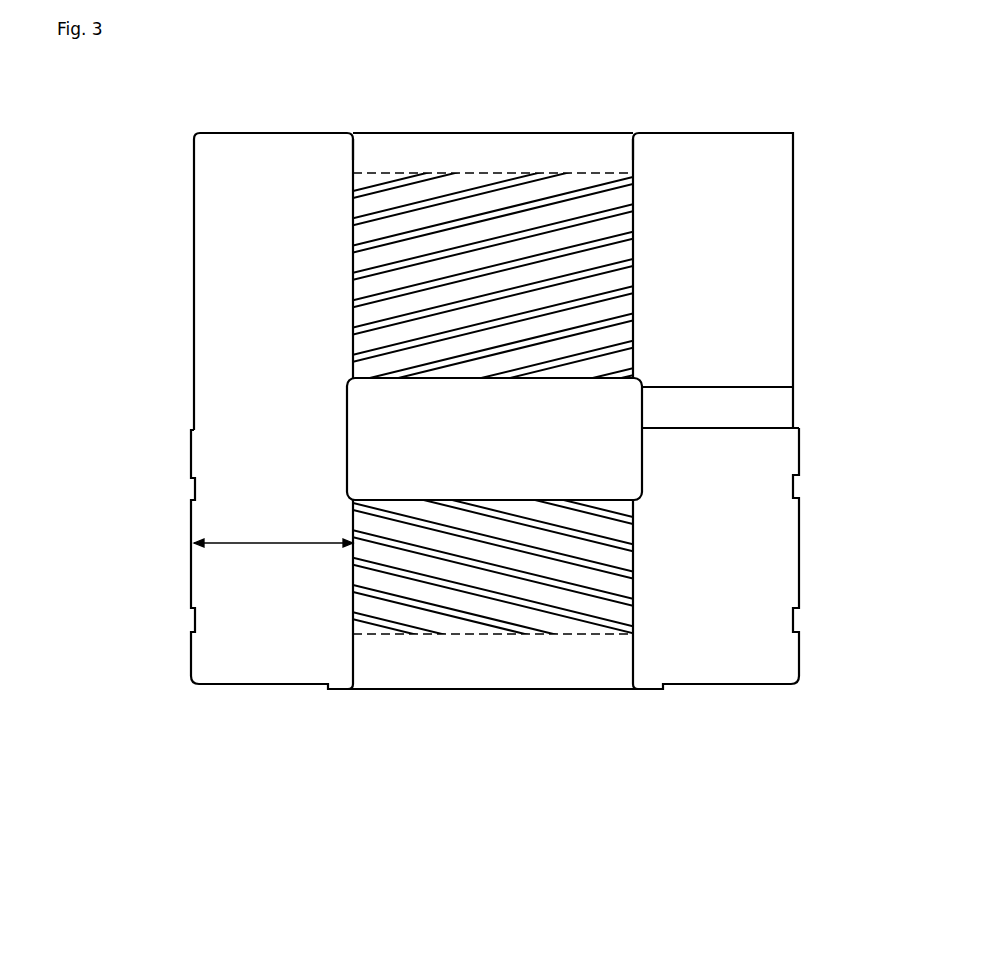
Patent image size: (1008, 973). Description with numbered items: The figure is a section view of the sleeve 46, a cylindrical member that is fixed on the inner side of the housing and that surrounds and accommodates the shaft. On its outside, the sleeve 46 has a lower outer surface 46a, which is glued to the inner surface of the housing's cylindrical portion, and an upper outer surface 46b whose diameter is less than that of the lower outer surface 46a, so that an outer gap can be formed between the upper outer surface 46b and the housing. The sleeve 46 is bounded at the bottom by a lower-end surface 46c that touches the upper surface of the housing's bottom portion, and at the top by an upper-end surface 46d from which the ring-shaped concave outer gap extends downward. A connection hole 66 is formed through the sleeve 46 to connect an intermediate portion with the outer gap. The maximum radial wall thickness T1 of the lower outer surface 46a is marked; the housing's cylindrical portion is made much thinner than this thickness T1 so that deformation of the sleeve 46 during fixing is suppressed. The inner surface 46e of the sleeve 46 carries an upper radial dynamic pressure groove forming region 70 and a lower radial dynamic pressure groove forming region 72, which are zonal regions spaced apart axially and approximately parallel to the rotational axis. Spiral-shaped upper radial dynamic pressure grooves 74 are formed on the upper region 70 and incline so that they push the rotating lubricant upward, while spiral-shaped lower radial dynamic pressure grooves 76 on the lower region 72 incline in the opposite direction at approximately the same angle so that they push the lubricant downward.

The sleeve 46 is at (494, 448).
The lower outer surface 46a is at (192, 568).
The upper outer surface 46b is at (194, 288).
The lower-end surface 46c is at (250, 689).
The upper-end surface 46d is at (215, 132).
The inner surface 46e is at (580, 153).
The connection hole 66 is at (780, 407).
The upper radial dynamic pressure groove forming region 70 is at (647, 172).
The lower radial dynamic pressure groove forming region 72 is at (647, 500).
The upper radial dynamic pressure grooves 74 is at (492, 187).
The lower radial dynamic pressure grooves 76 is at (390, 622).
The wall thickness T1 is at (268, 548).